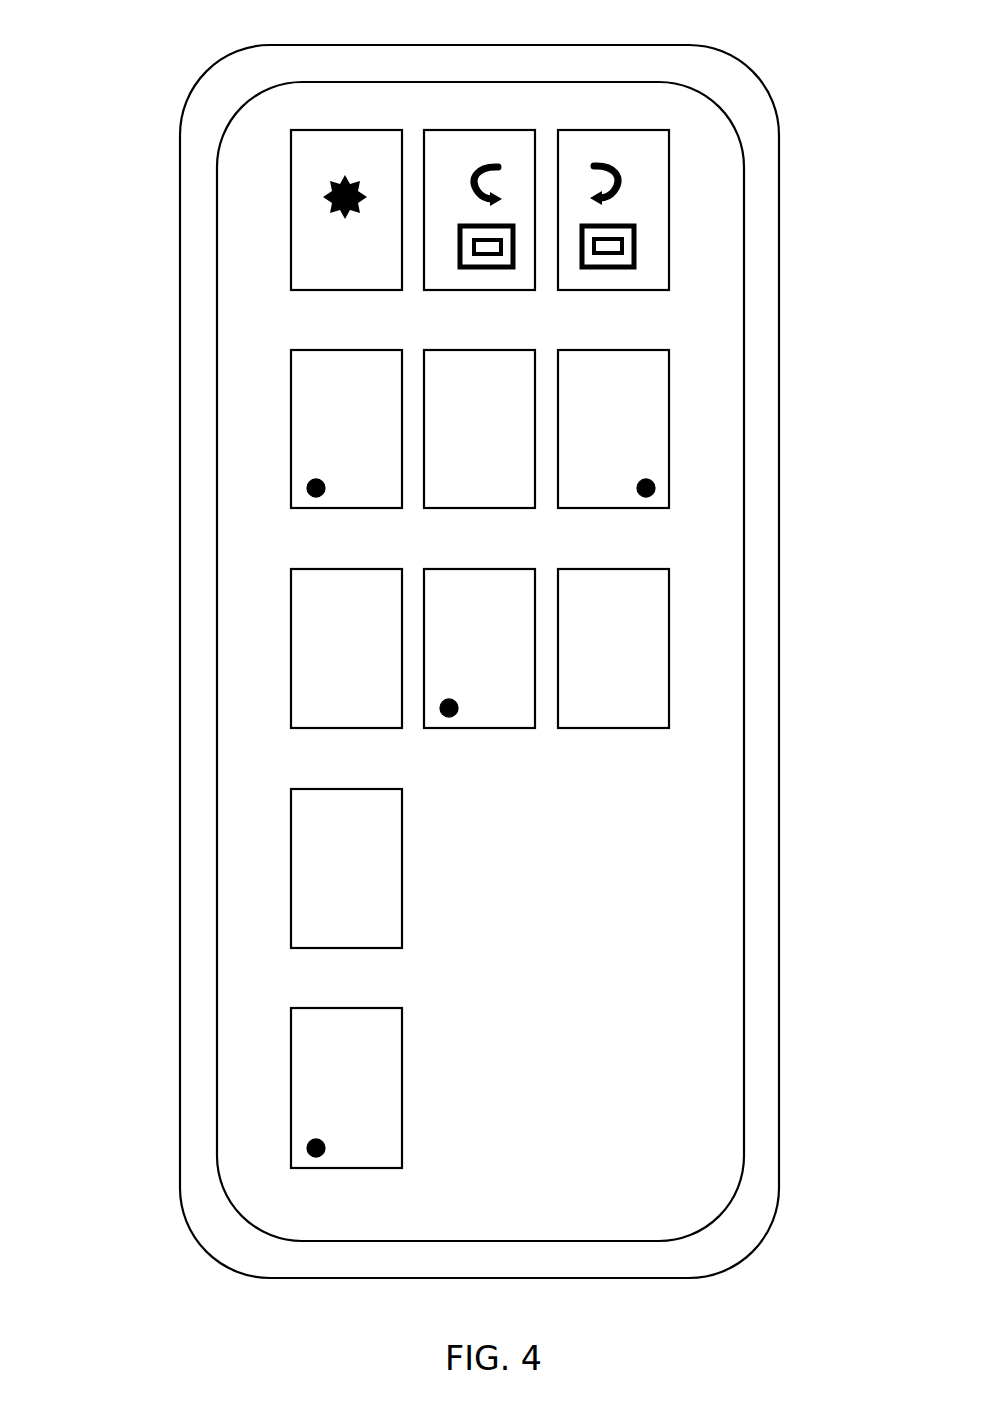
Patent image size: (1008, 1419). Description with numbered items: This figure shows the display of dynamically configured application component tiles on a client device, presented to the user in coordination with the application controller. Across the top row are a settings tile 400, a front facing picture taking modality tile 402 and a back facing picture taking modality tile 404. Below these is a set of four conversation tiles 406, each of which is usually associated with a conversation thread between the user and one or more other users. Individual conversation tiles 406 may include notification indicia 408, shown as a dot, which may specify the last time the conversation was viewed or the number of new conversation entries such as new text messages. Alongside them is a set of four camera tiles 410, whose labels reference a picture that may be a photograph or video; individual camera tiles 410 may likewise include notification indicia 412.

The settings tile 400 is at (315, 133).
The front facing picture taking modality tile 402 is at (457, 135).
The back facing picture taking modality tile 404 is at (600, 135).
The conversation tiles 406 is at (310, 352).
The notification indicia 408 is at (316, 488).
The camera tiles 410 is at (670, 372).
The notification indicia 412 is at (655, 485).